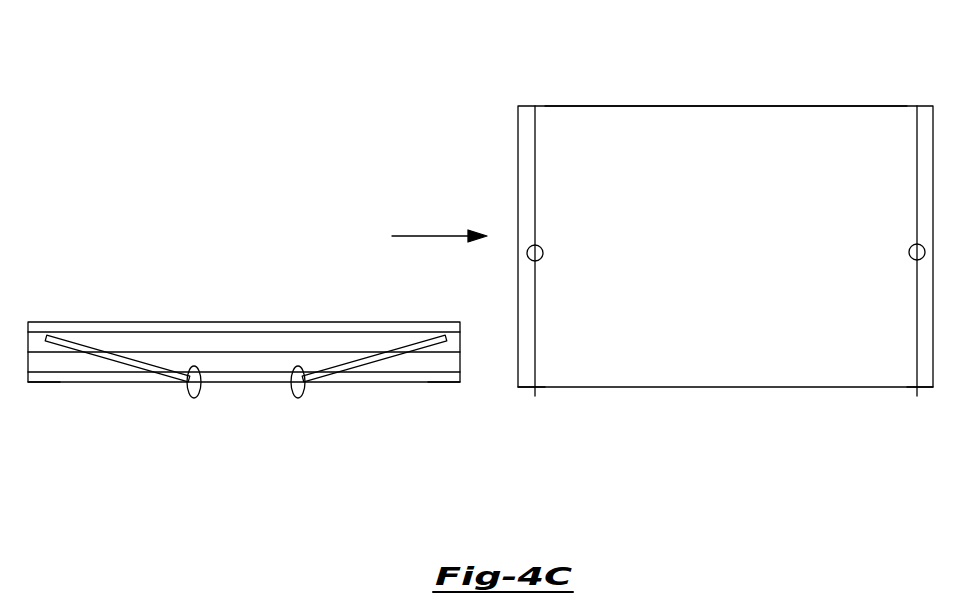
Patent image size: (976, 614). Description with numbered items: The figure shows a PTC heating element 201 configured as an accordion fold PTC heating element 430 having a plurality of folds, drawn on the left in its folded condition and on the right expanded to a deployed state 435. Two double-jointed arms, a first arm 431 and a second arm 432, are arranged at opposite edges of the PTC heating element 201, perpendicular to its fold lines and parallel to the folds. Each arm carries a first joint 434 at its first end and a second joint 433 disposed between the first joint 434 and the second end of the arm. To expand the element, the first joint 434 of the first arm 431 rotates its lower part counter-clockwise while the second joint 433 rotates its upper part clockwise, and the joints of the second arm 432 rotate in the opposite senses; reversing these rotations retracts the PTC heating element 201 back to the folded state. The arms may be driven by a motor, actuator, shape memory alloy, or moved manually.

The PTC heating element 201 is at (238, 322).
The accordion fold PTC heating element 430 is at (261, 438).
The first arm 431 is at (108, 352).
The second arm 432 is at (925, 153).
The second joint 433 is at (194, 398).
The first joint 434 is at (44, 383).
The deployed state 435 is at (740, 468).